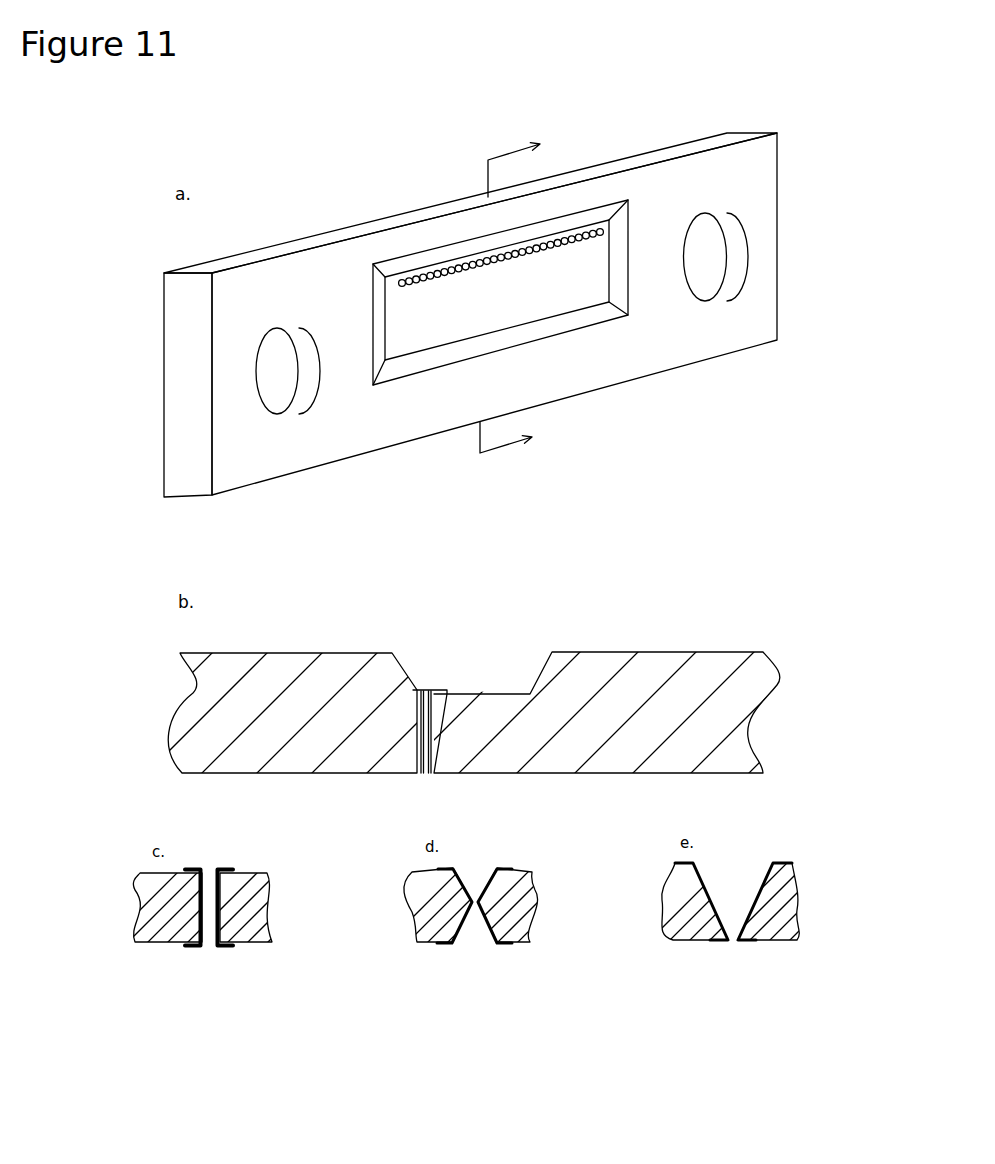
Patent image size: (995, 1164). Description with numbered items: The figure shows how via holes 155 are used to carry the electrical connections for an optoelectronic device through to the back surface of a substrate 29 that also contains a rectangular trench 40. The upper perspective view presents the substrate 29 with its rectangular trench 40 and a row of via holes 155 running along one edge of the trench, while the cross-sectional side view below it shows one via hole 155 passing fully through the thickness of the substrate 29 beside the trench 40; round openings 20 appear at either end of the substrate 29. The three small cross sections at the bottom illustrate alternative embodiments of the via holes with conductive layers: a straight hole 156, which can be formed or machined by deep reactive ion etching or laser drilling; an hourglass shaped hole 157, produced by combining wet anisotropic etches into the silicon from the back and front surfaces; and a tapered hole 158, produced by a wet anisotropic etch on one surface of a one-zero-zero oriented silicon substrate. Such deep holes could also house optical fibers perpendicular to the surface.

The substrate 29 is at (777, 202).
The mounting hole 20 is at (728, 280).
The rectangular trench 40 is at (515, 312).
The via holes 155 is at (452, 267).
The straight hole 156 is at (222, 935).
The hourglass shaped hole 157 is at (458, 937).
The tapered hole 158 is at (710, 920).